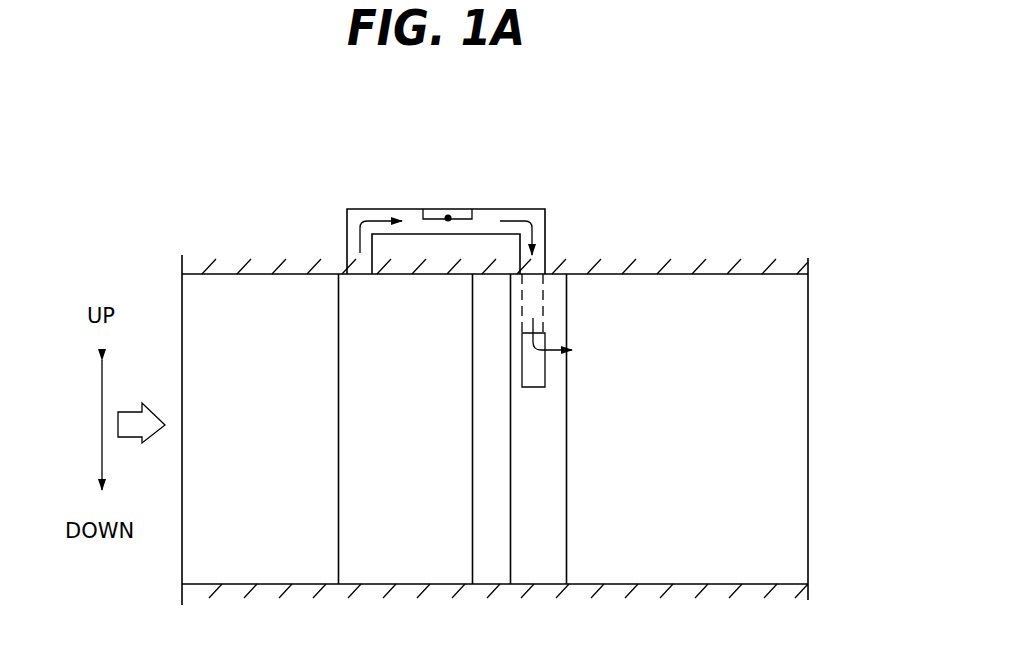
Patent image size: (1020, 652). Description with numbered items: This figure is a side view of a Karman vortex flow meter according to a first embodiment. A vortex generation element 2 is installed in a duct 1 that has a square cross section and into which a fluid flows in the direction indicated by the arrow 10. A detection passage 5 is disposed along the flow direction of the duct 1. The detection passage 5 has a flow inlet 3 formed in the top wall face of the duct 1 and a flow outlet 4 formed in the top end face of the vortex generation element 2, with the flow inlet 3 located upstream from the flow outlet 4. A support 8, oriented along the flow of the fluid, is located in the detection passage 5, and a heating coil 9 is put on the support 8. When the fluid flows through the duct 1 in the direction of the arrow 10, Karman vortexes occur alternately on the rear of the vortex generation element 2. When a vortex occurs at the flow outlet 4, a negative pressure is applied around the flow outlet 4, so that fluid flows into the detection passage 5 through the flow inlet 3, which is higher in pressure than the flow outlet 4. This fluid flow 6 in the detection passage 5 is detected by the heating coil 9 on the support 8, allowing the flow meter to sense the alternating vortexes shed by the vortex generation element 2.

The duct 1 is at (713, 584).
The vortex generation element 2 is at (484, 486).
The flow inlet 3 is at (357, 278).
The flow outlet 4 is at (546, 378).
The detection passage 5 is at (507, 207).
The fluid flow in the detection passage 6 is at (364, 220).
The support 8 is at (463, 207).
The heating coil 9 is at (447, 216).
The fluid flow direction 10 is at (128, 438).